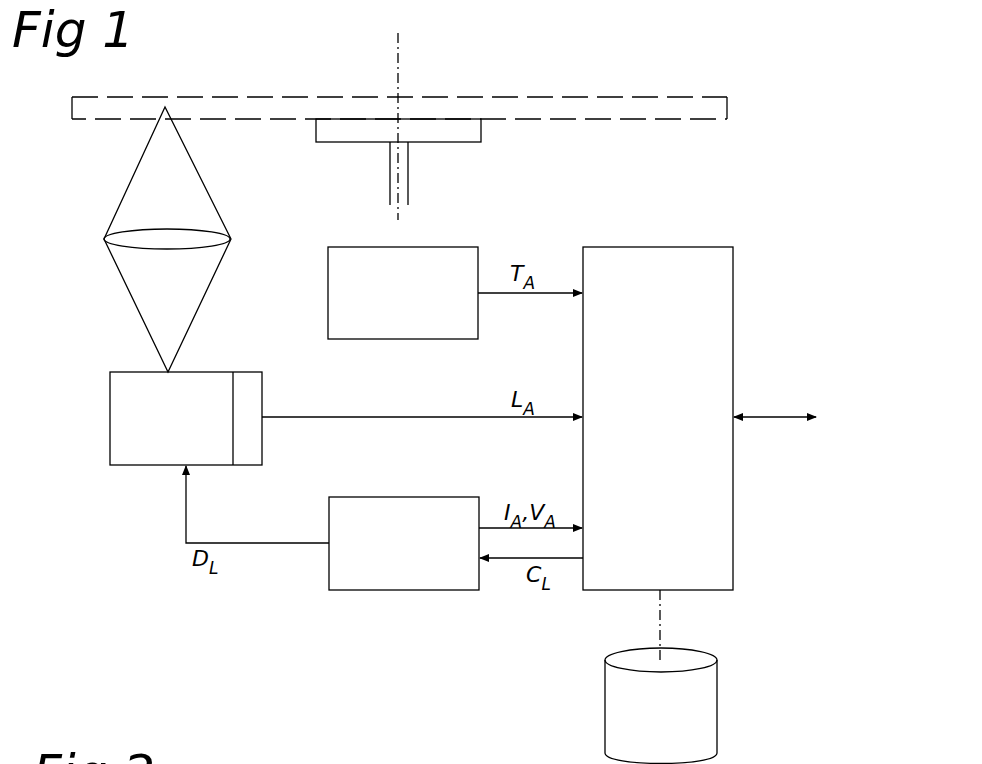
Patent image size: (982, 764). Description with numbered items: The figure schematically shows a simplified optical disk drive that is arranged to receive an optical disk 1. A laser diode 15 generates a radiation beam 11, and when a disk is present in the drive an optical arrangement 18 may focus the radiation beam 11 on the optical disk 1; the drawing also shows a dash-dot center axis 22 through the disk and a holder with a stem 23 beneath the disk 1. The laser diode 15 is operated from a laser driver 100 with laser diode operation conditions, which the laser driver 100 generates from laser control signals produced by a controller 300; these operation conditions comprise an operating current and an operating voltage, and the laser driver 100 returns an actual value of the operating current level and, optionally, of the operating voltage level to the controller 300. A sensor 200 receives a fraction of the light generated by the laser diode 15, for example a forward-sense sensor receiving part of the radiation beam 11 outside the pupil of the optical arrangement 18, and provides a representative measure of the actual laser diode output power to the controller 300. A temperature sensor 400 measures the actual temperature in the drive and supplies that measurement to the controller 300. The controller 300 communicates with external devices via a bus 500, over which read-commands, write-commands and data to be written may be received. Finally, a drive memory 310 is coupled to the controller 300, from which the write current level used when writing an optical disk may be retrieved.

The optical disk 1 is at (616, 101).
The optical axis 22 is at (397, 58).
The sensor holder with stem 23 is at (390, 183).
The radiation beam 11 is at (158, 316).
The optical arrangement 18 is at (133, 238).
The laser diode 15 is at (122, 413).
The sensor 200 is at (244, 392).
The temperature sensor 400 is at (444, 250).
The controller 300 is at (692, 252).
The laser driver 100 is at (416, 576).
The bus 500 is at (776, 417).
The drive memory 310 is at (694, 692).